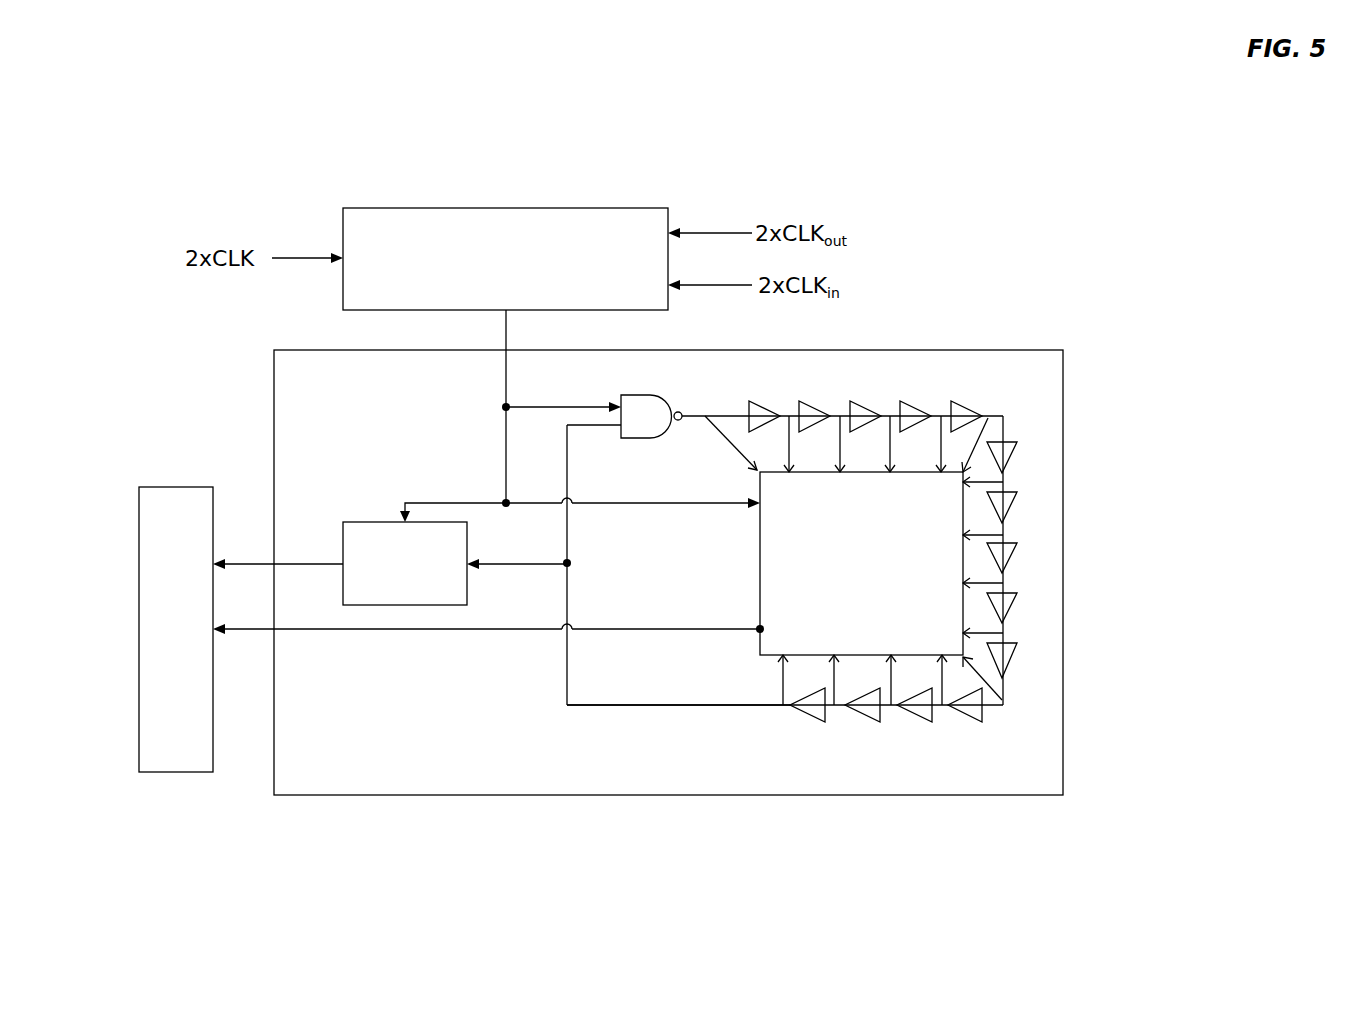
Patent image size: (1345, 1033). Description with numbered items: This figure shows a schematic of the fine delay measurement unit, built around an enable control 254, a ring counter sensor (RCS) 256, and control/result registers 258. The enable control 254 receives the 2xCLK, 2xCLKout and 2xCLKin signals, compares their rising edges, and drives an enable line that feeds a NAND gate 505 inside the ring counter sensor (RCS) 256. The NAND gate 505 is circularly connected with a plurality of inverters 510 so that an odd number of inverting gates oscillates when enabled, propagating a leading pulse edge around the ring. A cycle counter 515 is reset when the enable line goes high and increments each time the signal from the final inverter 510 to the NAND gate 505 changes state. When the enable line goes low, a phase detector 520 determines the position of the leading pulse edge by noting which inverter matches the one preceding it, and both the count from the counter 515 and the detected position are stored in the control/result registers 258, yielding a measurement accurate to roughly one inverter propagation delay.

The enable control 254 is at (505, 259).
The ring counter sensor (RCS) 256 is at (978, 781).
The control/result registers 258 is at (192, 757).
The NAND gate 505 is at (651, 416).
The circularly-connected inverters 510 is at (1028, 647).
The cycle counter 515 is at (405, 563).
The phase detector 520 is at (861, 563).